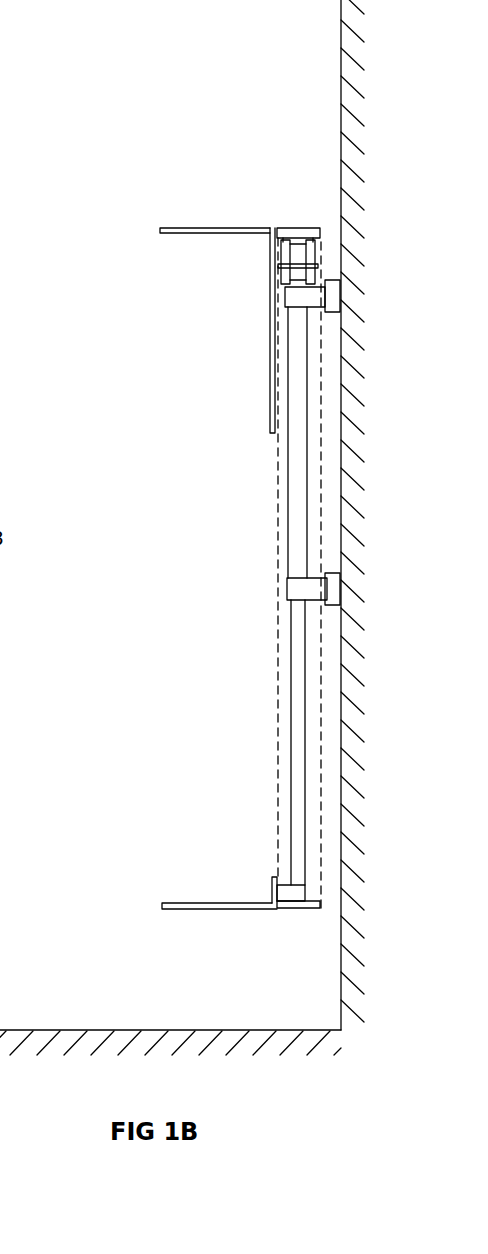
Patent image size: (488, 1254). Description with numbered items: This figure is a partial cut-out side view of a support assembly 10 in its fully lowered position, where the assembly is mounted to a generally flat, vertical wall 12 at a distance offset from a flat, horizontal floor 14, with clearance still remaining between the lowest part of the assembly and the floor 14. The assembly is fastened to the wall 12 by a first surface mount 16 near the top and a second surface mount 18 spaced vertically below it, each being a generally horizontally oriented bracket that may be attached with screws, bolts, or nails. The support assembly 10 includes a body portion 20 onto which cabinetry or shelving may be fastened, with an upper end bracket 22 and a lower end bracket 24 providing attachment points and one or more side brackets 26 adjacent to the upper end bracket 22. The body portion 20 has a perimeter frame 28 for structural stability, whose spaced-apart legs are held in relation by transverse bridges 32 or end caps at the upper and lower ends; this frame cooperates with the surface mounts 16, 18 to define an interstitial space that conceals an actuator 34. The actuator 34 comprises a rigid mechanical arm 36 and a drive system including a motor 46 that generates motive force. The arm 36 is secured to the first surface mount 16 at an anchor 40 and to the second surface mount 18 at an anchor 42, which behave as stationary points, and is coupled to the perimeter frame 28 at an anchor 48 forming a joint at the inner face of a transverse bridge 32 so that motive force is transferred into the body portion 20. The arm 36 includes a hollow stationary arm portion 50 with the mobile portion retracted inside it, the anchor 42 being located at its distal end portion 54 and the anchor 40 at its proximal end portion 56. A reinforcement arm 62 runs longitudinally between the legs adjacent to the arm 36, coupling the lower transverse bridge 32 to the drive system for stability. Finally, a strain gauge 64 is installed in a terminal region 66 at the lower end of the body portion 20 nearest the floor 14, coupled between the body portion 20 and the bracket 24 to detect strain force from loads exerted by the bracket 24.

The support assembly 10 is at (123, 92).
The wall 12 is at (340, 70).
The floor 14 is at (50, 1028).
The first surface mount 16 is at (332, 312).
The second surface mount 18 is at (330, 605).
The body portion 20 is at (267, 730).
The upper end bracket 22 is at (182, 235).
The lower end bracket 24 is at (175, 903).
The side bracket 26 is at (270, 412).
The perimeter frame 28 is at (267, 687).
The transverse bridge 32 is at (305, 226).
The actuator 34 is at (282, 519).
The mechanical arm 36 is at (288, 479).
The anchor 40 is at (298, 297).
The anchor 42 is at (302, 590).
The motor 46 is at (313, 258).
The anchor 48 is at (278, 241).
The stationary arm portion 50 is at (300, 433).
The distal end portion 54 is at (285, 553).
The proximal end portion 56 is at (297, 312).
The reinforcement arm 62 is at (300, 787).
The strain gauge 64 is at (290, 892).
The terminal region 66 is at (287, 915).